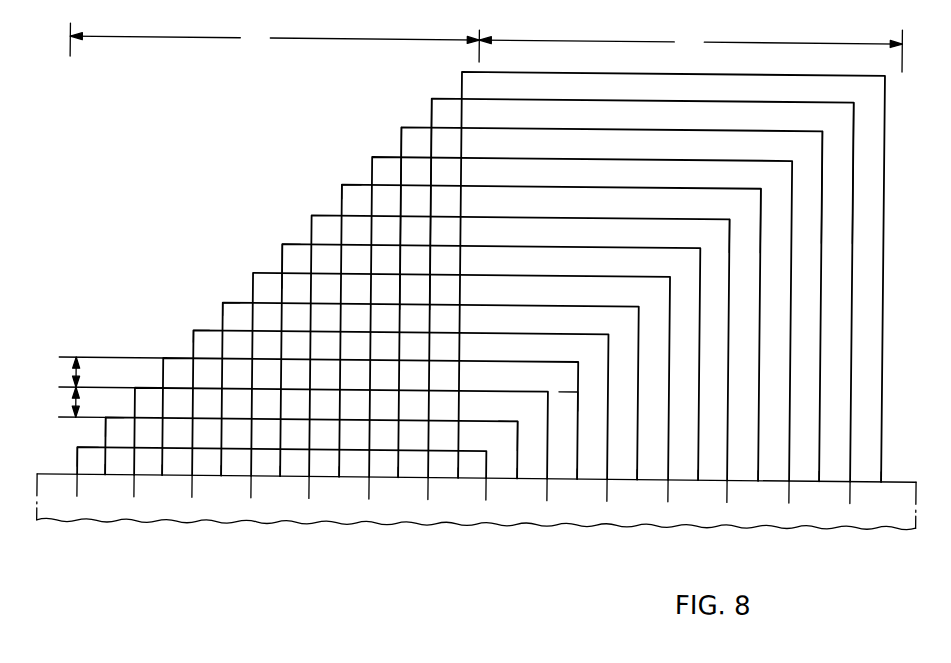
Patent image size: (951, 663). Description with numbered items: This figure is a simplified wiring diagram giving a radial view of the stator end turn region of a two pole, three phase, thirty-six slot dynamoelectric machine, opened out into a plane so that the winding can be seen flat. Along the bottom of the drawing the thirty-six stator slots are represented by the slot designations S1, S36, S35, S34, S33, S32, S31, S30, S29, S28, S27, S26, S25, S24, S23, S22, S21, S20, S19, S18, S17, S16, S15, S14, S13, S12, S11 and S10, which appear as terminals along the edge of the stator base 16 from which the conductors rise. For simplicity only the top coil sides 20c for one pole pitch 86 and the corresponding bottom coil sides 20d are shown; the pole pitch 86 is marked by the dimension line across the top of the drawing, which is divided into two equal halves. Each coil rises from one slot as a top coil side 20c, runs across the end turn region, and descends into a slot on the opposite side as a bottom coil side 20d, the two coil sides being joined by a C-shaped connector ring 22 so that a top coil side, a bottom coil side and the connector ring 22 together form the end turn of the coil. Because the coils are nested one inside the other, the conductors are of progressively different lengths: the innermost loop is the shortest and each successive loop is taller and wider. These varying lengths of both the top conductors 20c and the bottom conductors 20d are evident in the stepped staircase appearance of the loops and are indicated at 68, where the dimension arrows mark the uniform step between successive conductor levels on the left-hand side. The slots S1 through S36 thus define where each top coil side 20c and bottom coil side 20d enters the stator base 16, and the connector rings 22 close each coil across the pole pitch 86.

The base substrate 16 is at (906, 516).
The top coil sides 20c is at (400, 208).
The bottom coil sides 20d is at (578, 393).
The C-shaped connector ring 22 is at (718, 128).
The varying conductor lengths 68 is at (75, 378).
The pole pitch 86 is at (486, 47).
The slot S1 is at (77, 496).
The slot S10 is at (880, 489).
The slot S11 is at (849, 503).
The slot S12 is at (818, 488).
The slot S13 is at (788, 503).
The slot S14 is at (757, 488).
The slot S15 is at (726, 502).
The slot S16 is at (697, 487).
The slot S17 is at (667, 502).
The slot S18 is at (636, 486).
The slot S19 is at (606, 501).
The slot S20 is at (576, 486).
The slot S21 is at (546, 501).
The slot S22 is at (516, 485).
The slot S23 is at (485, 500).
The slot S24 is at (457, 485).
The slot S25 is at (427, 499).
The slot S26 is at (397, 484).
The slot S27 is at (368, 499).
The slot S28 is at (338, 484).
The slot S29 is at (308, 498).
The slot S30 is at (279, 483).
The slot S31 is at (250, 498).
The slot S32 is at (220, 482).
The slot S33 is at (191, 497).
The slot S34 is at (161, 482).
The slot S35 is at (133, 497).
The slot S36 is at (104, 481).